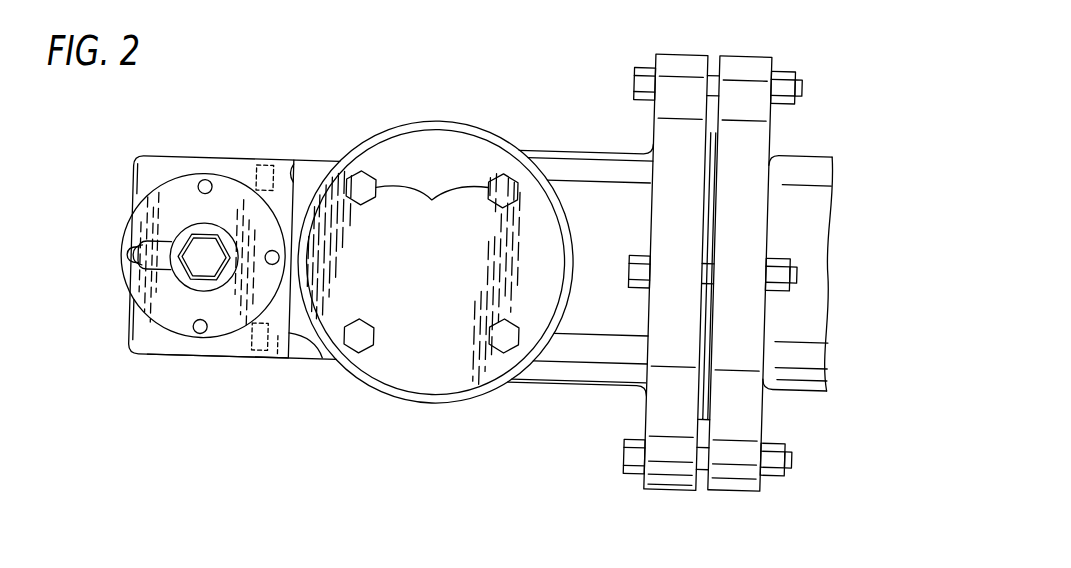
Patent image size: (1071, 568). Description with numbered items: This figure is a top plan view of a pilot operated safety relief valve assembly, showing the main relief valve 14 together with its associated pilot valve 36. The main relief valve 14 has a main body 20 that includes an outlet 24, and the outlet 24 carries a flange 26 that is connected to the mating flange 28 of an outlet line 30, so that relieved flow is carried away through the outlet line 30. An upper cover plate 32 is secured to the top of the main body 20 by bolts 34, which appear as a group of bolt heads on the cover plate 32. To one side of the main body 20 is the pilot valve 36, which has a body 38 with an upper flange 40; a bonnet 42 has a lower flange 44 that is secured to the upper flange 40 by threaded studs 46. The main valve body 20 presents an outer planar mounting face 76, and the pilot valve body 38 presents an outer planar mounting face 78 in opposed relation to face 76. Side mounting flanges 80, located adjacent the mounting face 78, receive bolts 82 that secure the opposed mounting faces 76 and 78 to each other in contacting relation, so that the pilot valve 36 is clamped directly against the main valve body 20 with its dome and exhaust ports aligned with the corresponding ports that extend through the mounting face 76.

The main relief valve 14 is at (460, 114).
The main body 20 is at (496, 125).
The outlet 24 is at (585, 152).
The flange 26 is at (676, 48).
The flange 28 is at (737, 48).
The outlet line 30 is at (804, 148).
The upper cover plate 32 is at (425, 279).
The bolts 34 is at (432, 264).
The pilot valve 36 is at (225, 156).
The body 38 is at (151, 371).
The upper flange 40 is at (134, 343).
The bonnet 42 is at (168, 290).
The lower flange 44 is at (219, 333).
The threaded studs 46 is at (201, 186).
The outer planar mounting face 76 is at (290, 161).
The outer planar mounting face 78 is at (315, 363).
The side mounting flanges 80 is at (277, 160).
The bolts 82 is at (257, 348).